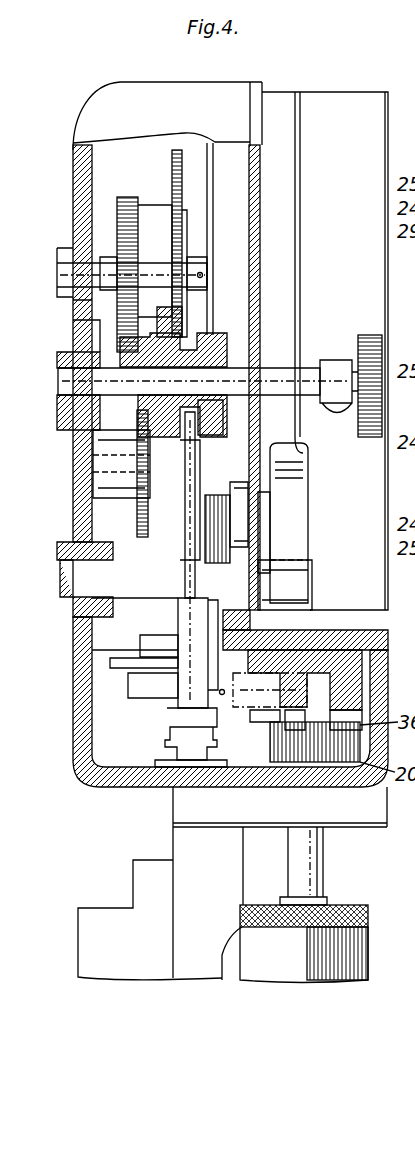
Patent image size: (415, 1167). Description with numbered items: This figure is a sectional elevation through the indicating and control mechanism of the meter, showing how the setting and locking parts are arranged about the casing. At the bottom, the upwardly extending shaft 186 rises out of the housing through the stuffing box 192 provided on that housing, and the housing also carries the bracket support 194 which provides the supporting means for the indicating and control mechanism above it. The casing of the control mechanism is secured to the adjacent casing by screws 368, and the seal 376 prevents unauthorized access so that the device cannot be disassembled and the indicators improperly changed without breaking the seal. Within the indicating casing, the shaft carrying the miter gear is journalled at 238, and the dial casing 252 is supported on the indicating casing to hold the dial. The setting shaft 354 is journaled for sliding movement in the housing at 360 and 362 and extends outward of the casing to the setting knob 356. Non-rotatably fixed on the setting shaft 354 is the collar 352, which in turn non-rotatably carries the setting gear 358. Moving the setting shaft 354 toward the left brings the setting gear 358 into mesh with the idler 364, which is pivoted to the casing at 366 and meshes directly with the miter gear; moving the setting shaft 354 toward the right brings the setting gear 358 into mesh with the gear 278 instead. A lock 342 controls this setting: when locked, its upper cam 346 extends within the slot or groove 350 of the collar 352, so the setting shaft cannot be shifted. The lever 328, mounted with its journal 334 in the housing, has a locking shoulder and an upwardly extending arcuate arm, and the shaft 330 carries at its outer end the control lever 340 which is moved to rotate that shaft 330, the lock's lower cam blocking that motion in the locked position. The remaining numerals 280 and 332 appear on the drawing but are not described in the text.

The journal 238 is at (83, 165).
The dial casing 252 is at (312, 100).
The gear 278 is at (178, 150).
The gear 280 is at (128, 197).
The slot or groove 350 is at (255, 293).
The collar 352 is at (207, 333).
The journal 362 is at (258, 353).
The setting knob 356 is at (368, 335).
The setting shaft 354 is at (303, 378).
The setting gear 358 is at (138, 320).
The journal 360 is at (75, 366).
The pivot 366 is at (75, 468).
The idler 364 is at (140, 509).
The lever 328 is at (182, 520).
The upper cam 346 is at (192, 487).
The control lever 340 is at (298, 480).
The lock 342 is at (240, 527).
The journal 334 is at (312, 585).
The flange 332 is at (70, 612).
The shaft 330 is at (137, 597).
The seal 376 is at (248, 698).
The screws 368 is at (258, 712).
The bracket support 194 is at (185, 845).
The shaft 186 is at (325, 861).
The stuffing box 192 is at (282, 975).